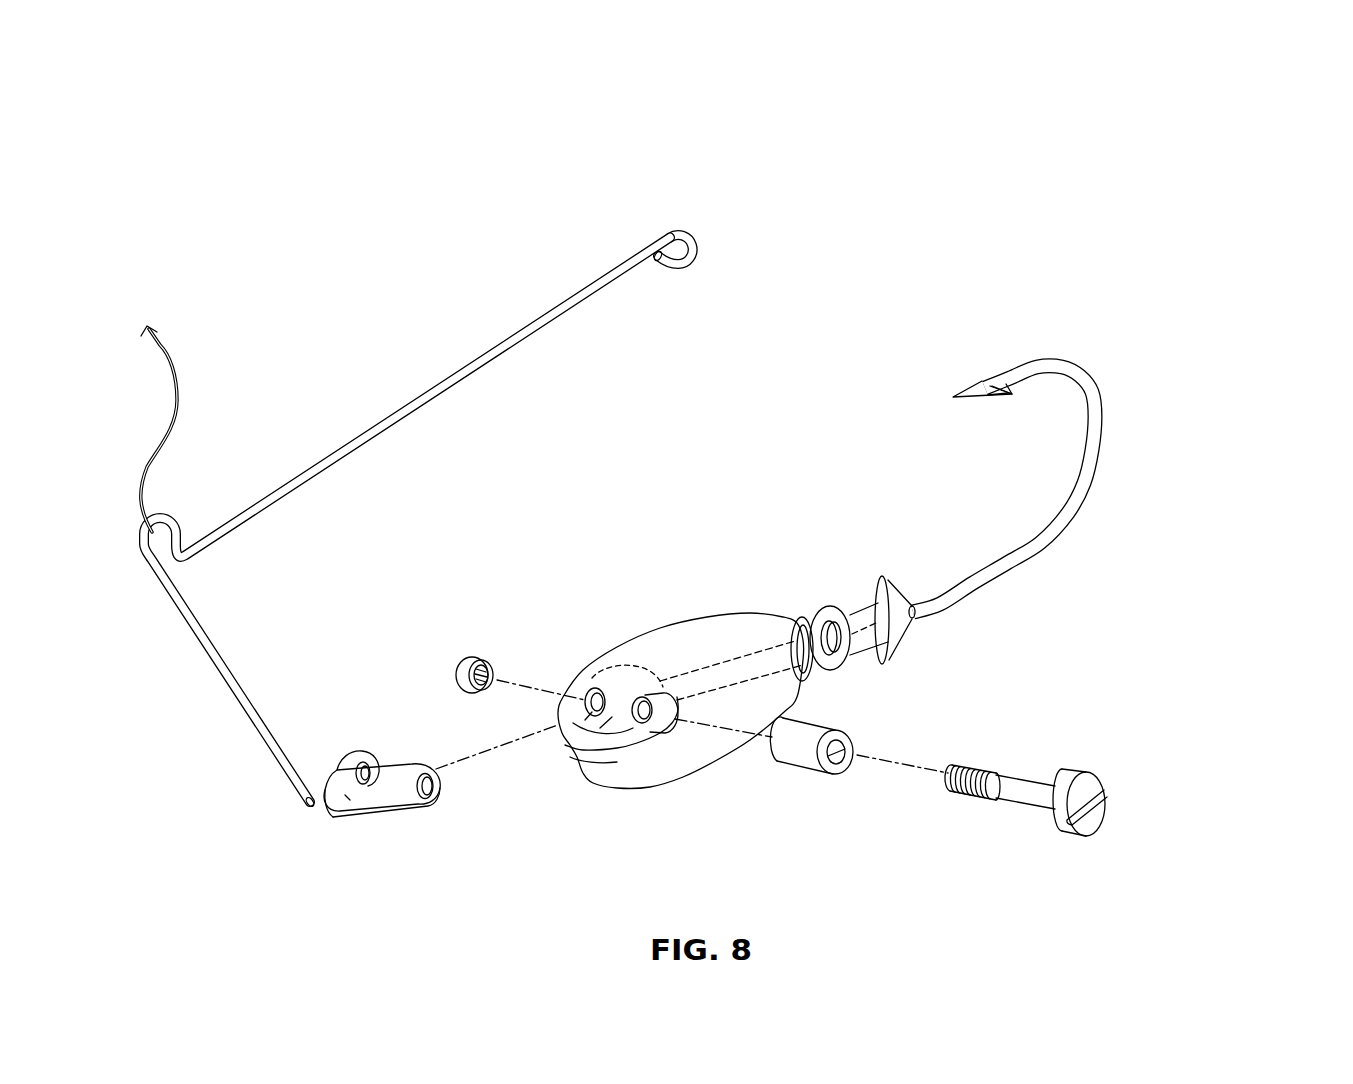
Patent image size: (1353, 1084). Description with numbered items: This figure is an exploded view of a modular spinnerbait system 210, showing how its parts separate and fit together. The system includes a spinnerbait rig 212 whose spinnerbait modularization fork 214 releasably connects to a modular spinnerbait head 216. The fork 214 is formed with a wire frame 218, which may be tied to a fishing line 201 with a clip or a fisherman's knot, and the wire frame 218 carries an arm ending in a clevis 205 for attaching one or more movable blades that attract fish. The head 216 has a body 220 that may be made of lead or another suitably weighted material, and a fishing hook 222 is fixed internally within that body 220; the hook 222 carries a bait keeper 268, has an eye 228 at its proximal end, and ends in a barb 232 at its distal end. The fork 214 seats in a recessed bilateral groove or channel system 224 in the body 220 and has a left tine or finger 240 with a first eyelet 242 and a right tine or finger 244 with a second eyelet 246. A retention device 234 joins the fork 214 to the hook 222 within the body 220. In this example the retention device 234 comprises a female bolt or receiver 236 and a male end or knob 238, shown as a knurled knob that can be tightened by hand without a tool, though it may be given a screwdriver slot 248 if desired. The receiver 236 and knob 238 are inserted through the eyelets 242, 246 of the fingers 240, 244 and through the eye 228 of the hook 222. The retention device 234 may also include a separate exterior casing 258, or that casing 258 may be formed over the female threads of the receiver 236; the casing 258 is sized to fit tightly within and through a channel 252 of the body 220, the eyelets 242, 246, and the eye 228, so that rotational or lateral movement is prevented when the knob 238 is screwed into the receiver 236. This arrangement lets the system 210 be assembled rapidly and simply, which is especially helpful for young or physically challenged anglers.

The fishing line 201 is at (178, 397).
The clevis 205 is at (683, 228).
The modular spinnerbait system 210 is at (1033, 142).
The spinnerbait rig 212 is at (783, 395).
The spinnerbait modularization fork 214 is at (393, 833).
The modular spinnerbait head 216 is at (770, 581).
The wire frame 218 is at (385, 418).
The body 220 is at (728, 614).
The fishing hook 222 is at (1157, 410).
The recessed bilateral groove or channel system 224 is at (587, 750).
The eye 228 is at (622, 710).
The barb 232 is at (962, 403).
The retention device 234 is at (910, 727).
The receiver 236 is at (472, 657).
The knob 238 is at (977, 804).
The left tine or finger 240 is at (340, 757).
The first eyelet 242 is at (385, 768).
The right tine or finger 244 is at (360, 810).
The second eyelet 246 is at (442, 797).
The screwdriver slot 248 is at (1107, 800).
The channel 252 is at (670, 723).
The casing 258 is at (803, 750).
The bait keeper 268 is at (842, 575).